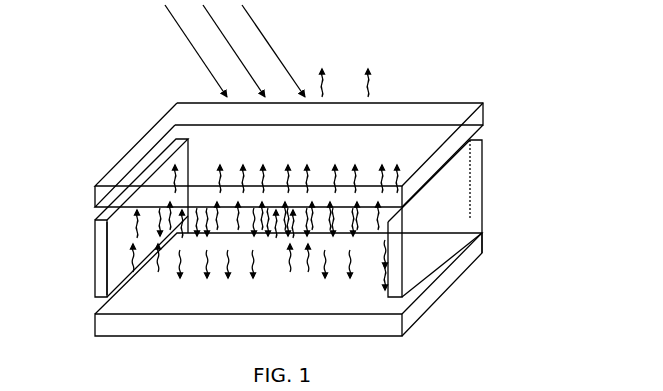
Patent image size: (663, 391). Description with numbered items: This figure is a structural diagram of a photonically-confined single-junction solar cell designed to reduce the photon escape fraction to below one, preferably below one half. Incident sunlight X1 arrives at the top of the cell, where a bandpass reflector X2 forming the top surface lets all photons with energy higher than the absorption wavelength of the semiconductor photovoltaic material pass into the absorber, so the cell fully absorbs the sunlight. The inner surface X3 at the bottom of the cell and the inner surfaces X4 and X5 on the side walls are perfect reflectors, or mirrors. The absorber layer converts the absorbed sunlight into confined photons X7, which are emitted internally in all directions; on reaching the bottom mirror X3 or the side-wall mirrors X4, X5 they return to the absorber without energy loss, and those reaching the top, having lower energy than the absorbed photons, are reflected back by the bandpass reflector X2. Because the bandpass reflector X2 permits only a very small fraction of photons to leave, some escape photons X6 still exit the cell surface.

The incident sunlight X1 is at (203, 78).
The bandpass reflector X2 is at (438, 115).
The perfect reflector X3 is at (415, 292).
The perfect reflector X4 is at (440, 217).
The perfect reflector X5 is at (120, 238).
The escape photons X6 is at (375, 75).
The confined photons X7 is at (132, 255).